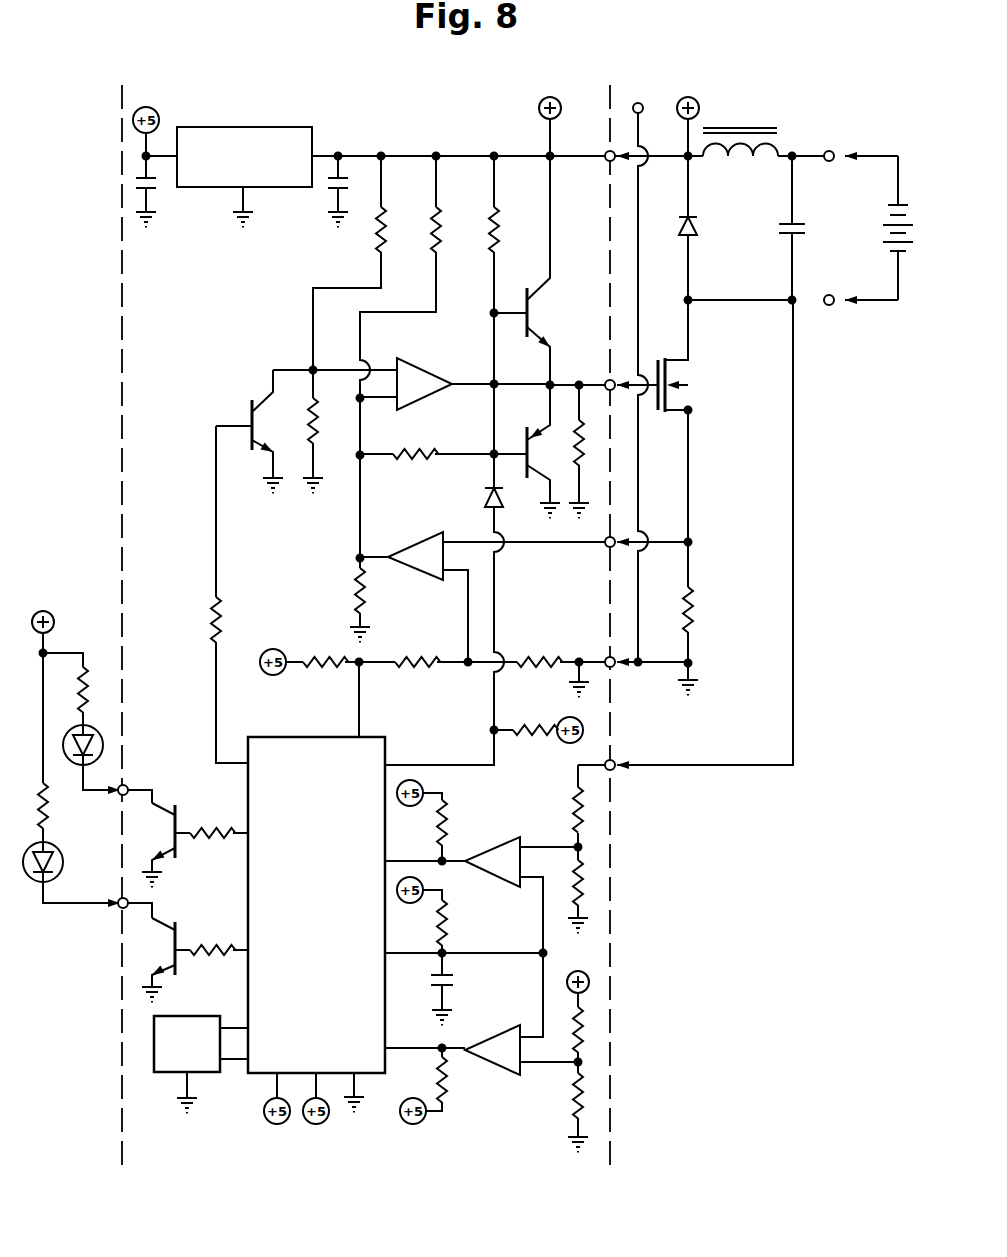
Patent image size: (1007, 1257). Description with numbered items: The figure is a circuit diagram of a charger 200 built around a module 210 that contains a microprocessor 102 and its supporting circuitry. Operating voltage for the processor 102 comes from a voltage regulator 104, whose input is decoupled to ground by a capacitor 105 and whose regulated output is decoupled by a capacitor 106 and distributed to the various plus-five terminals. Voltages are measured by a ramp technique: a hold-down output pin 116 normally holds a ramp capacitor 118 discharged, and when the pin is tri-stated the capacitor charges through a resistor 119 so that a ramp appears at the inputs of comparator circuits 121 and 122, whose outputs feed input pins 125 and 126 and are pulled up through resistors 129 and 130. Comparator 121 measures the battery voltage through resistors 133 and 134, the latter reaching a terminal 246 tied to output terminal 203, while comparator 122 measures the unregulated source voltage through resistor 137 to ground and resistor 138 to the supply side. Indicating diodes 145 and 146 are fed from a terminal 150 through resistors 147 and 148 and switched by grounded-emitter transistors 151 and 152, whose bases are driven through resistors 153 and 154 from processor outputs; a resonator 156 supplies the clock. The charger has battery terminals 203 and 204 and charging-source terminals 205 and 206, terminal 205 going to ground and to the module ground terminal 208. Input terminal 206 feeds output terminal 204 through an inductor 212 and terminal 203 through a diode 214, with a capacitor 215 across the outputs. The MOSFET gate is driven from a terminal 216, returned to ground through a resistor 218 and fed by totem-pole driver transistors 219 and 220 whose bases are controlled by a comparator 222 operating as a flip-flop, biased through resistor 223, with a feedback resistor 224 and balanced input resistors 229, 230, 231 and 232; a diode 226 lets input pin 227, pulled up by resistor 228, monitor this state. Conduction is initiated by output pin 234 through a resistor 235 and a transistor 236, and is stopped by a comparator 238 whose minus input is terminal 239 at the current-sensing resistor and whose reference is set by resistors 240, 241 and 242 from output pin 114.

The microprocessor 102 is at (266, 737).
The voltage regulator 104 is at (260, 126).
The capacitor 105 is at (330, 195).
The capacitor 106 is at (160, 195).
The output pin 114 is at (356, 737).
The hold-down output pin 116 is at (390, 952).
The ramp capacitor 118 is at (455, 980).
The resistor 119 is at (450, 915).
The comparator circuit 121 is at (470, 852).
The comparator circuit 122 is at (480, 1060).
The input pin 125 is at (390, 860).
The input pin 126 is at (390, 1048).
The resistor 129 is at (447, 815).
The resistor 130 is at (450, 1090).
The resistor 133 is at (585, 882).
The resistor 134 is at (572, 810).
The resistor 137 is at (570, 1090).
The resistor 138 is at (585, 1020).
The indicating diode 145 is at (103, 735).
The indicating diode 146 is at (63, 868).
The resistor 147 is at (87, 675).
The resistor 148 is at (55, 808).
The terminal 150 is at (52, 612).
The transistor 151 is at (178, 803).
The transistor 152 is at (178, 922).
The resistor 153 is at (210, 840).
The resistor 154 is at (210, 960).
The resonator 156 is at (168, 1073).
The charger 200 is at (815, 92).
The terminal 203 is at (830, 305).
The terminal 204 is at (829, 150).
The terminal 205 is at (637, 103).
The terminal 206 is at (697, 103).
The ground terminal 208 is at (612, 668).
The module 210 is at (615, 713).
The inductor 212 is at (718, 160).
The diode 214 is at (697, 233).
The capacitor 215 is at (802, 233).
The terminal 216 is at (606, 378).
The resistor 218 is at (589, 444).
The driver transistor 219 is at (523, 422).
The driver transistor 220 is at (542, 302).
The comparator 222 is at (448, 345).
The resistor 223 is at (488, 221).
The feedback resistor 224 is at (410, 448).
The diode 226 is at (484, 496).
The input pin 227 is at (395, 762).
The resistor 228 is at (545, 725).
The resistor 229 is at (352, 583).
The resistor 230 is at (432, 221).
The resistor 231 is at (318, 432).
The resistor 232 is at (376, 230).
The output pin 234 is at (246, 775).
The resistor 235 is at (210, 608).
The transistor 236 is at (248, 410).
The comparator 238 is at (402, 546).
The terminal 239 is at (606, 544).
The resistor 240 is at (540, 655).
The resistor 241 is at (415, 655).
The resistor 242 is at (335, 658).
The terminal 246 is at (617, 772).